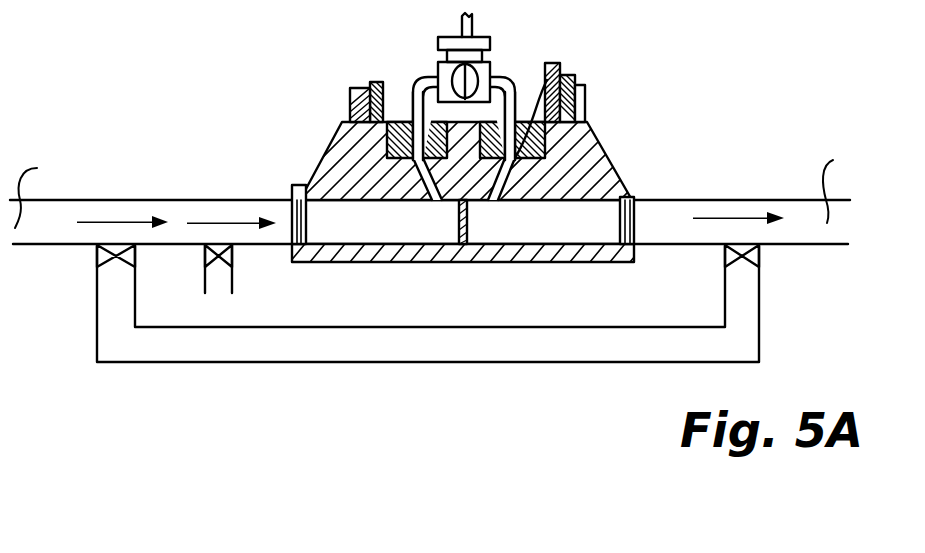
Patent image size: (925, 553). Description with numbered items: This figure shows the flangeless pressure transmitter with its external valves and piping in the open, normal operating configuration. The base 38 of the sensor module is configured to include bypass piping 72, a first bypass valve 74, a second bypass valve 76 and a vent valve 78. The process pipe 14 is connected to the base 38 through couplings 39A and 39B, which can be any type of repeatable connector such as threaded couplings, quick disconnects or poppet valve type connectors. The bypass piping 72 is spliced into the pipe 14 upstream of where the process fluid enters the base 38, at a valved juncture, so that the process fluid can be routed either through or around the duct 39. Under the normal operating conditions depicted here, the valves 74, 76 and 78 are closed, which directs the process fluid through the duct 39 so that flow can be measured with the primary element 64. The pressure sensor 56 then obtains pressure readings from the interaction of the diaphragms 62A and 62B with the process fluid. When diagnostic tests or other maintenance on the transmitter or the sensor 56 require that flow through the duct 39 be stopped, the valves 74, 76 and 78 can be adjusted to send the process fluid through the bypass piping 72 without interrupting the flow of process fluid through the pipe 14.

The pipe 14 is at (439, 196).
The base 38 is at (615, 158).
The duct 39 is at (600, 234).
The coupling 39A is at (624, 192).
The coupling 39B is at (294, 188).
The pressure sensor 56 is at (483, 70).
The diaphragm 62A is at (571, 83).
The diaphragm 62B is at (413, 155).
The primary element 64 is at (466, 236).
The bypass piping 72 is at (537, 350).
The first bypass valve 74 is at (97, 258).
The second bypass valve 76 is at (760, 255).
The vent valve 78 is at (232, 257).